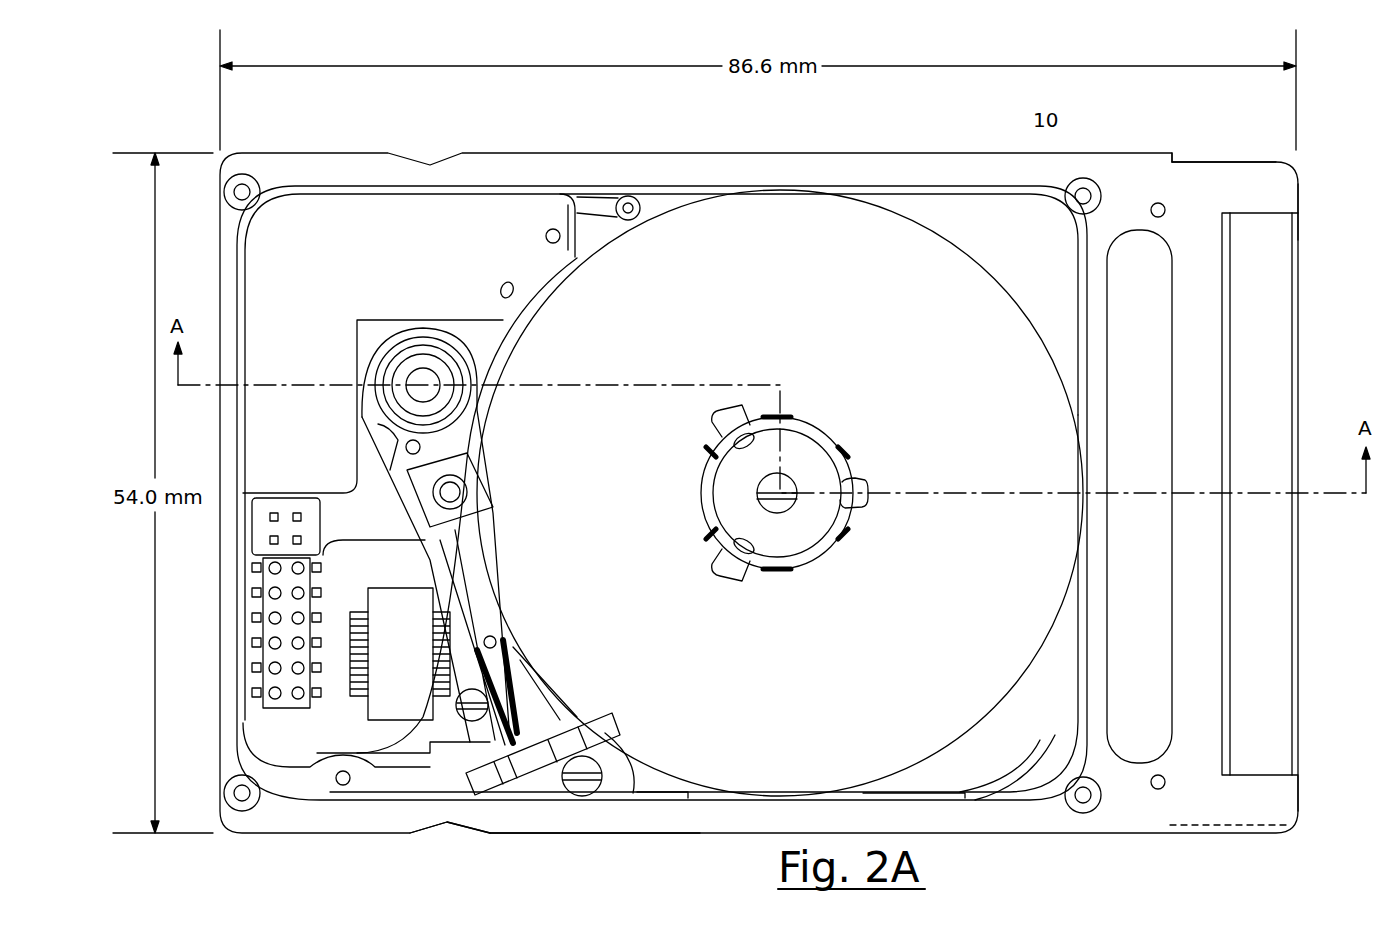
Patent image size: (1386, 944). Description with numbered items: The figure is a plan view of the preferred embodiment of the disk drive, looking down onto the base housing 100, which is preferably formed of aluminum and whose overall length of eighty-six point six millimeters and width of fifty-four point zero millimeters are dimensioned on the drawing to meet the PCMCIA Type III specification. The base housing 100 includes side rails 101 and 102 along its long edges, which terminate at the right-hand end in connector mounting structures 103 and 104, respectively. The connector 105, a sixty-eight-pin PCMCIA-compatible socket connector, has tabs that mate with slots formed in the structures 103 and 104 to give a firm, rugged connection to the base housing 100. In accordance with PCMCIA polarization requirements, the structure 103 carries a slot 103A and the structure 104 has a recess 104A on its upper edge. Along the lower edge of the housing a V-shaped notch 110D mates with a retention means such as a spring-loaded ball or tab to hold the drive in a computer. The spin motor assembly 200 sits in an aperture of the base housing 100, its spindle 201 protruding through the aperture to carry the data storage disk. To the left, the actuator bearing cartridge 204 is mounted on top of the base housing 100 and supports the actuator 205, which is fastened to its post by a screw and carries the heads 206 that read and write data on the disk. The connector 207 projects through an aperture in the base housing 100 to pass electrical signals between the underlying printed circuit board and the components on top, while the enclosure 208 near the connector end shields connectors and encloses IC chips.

The base housing 100 is at (500, 165).
The side rail 101 is at (668, 833).
The side rail 102 is at (820, 152).
The connector mounting structure 103 is at (1290, 805).
The slot 103A is at (1272, 836).
The connector mounting structure 104 is at (1278, 182).
The recess 104A is at (1223, 160).
The connector 105 is at (1280, 620).
The notch in bottom edge 110D is at (447, 832).
The spin motor assembly 200 is at (963, 394).
The spindle 201 is at (815, 472).
The actuator bearing cartridge 204 is at (423, 378).
The actuator 205 is at (498, 560).
The heads 206 is at (513, 745).
The connector 207 is at (300, 605).
The enclosure 208 is at (1160, 252).